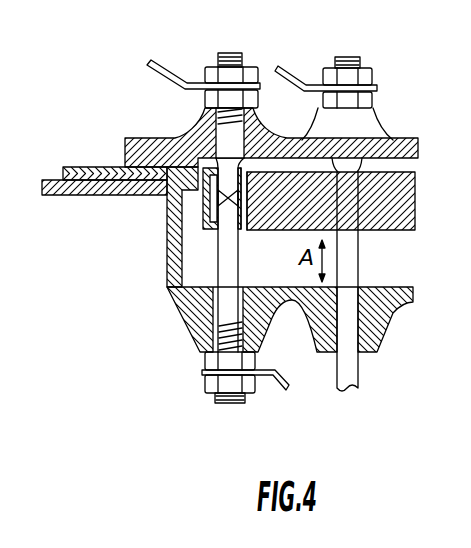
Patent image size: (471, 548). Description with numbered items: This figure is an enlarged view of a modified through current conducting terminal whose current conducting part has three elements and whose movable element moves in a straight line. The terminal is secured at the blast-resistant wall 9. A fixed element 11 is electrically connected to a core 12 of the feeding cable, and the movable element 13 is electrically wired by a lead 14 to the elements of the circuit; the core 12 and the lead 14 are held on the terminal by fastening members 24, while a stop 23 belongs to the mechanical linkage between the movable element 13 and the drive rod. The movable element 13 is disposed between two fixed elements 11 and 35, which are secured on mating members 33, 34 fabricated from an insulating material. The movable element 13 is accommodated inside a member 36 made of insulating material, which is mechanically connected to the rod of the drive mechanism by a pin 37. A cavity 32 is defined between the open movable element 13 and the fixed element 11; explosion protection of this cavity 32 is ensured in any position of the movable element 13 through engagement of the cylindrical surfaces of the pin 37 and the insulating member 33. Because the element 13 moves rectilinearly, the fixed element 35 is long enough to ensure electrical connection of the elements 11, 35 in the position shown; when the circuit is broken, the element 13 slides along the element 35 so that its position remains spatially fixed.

The blast-resistant wall 9 is at (77, 197).
The element of the current conducting part 11 is at (230, 53).
The core of the feeding cable 12 is at (174, 75).
The movable element of the current conducting part 13 is at (204, 207).
The lead 14 is at (284, 390).
The stop 23 is at (205, 360).
The fastening member 24 is at (368, 78).
The cavity 32 is at (390, 261).
The member made of insulating material 33 is at (383, 318).
The member made of insulating material 34 is at (412, 140).
The fixed element of the current conducting part 35 is at (222, 311).
The member made of insulating material 36 is at (407, 183).
The pin 37 is at (348, 378).